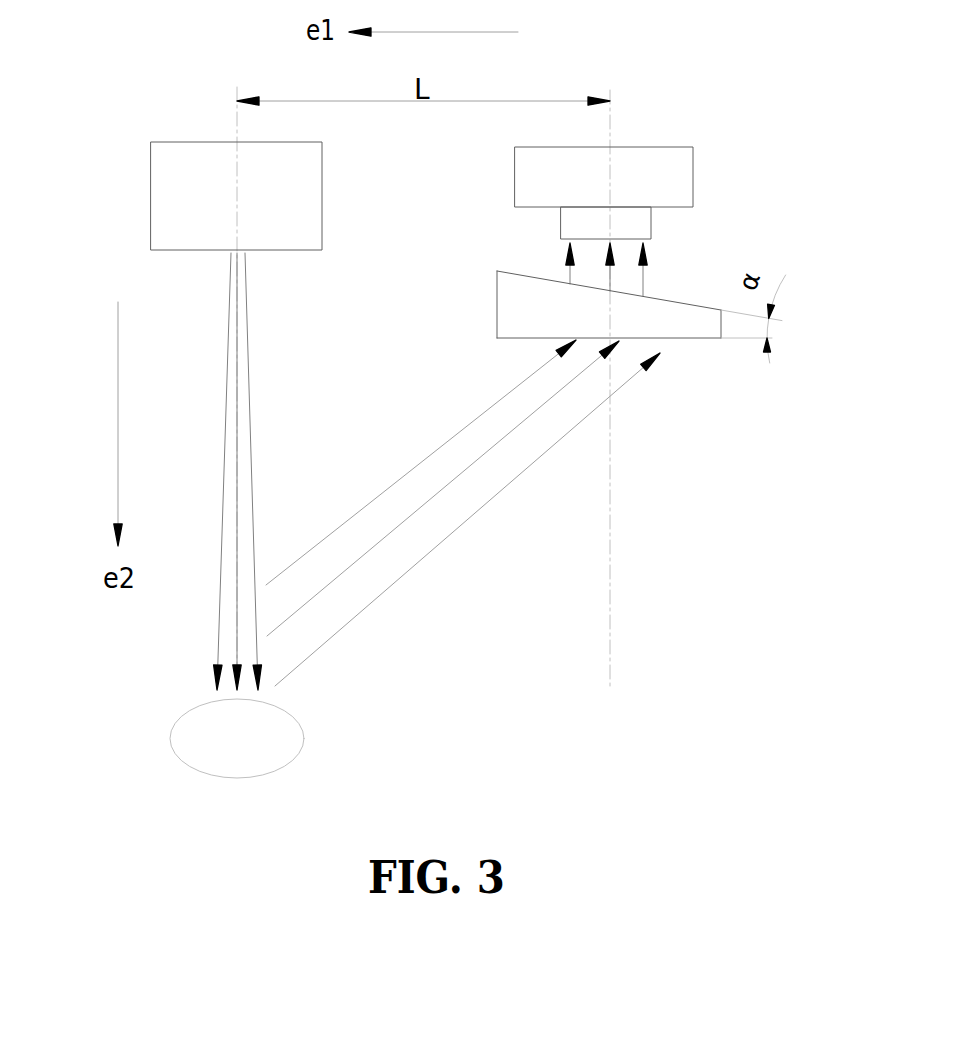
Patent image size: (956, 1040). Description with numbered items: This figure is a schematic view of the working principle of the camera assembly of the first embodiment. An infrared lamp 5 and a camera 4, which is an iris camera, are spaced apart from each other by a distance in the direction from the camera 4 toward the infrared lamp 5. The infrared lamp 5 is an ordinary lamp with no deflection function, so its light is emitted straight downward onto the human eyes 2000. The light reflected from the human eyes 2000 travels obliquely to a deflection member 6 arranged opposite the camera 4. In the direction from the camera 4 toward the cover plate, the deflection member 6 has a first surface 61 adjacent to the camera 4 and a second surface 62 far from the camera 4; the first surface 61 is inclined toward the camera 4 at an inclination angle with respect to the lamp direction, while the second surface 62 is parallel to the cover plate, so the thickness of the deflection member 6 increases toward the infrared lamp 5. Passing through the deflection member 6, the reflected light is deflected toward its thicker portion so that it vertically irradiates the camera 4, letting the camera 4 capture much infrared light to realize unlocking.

The camera 4 is at (684, 176).
The infrared lamp 5 is at (173, 194).
The deflection member 6 is at (611, 331).
The first surface 61 is at (668, 299).
The second surface 62 is at (677, 338).
The human eyes 2000 is at (252, 768).